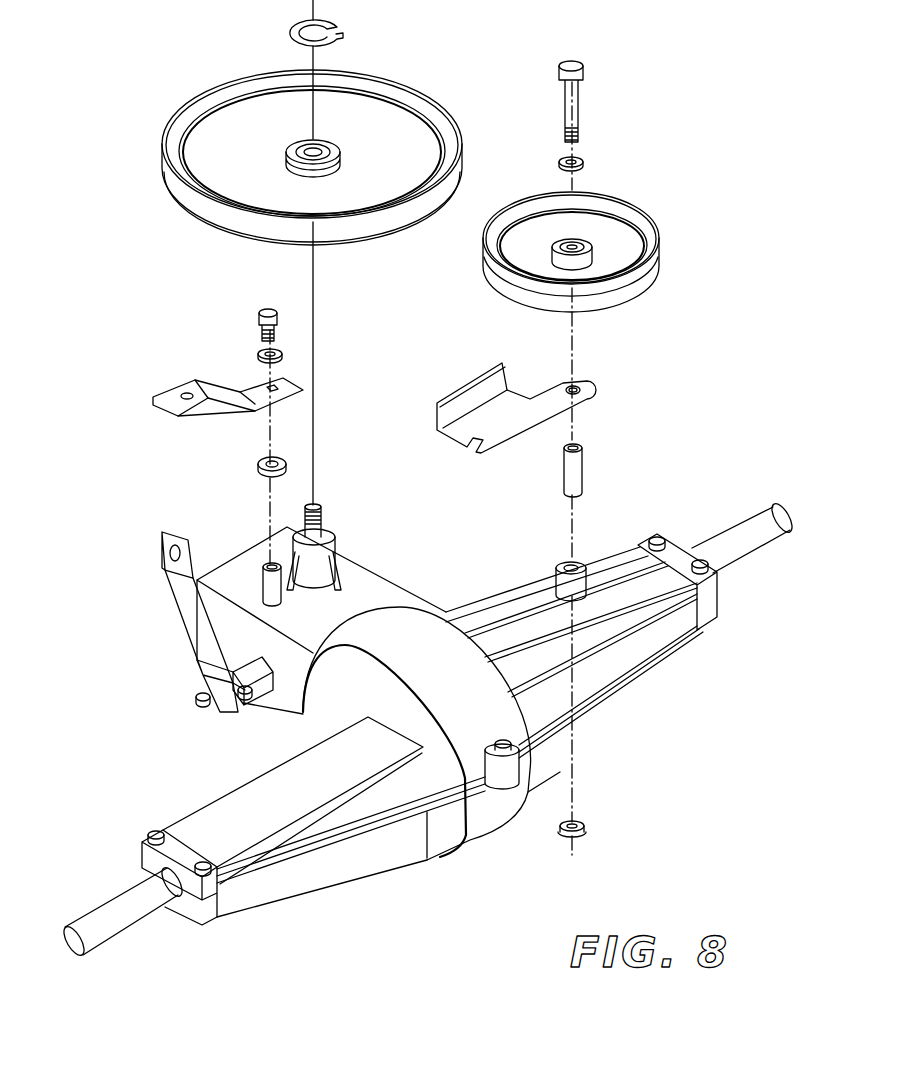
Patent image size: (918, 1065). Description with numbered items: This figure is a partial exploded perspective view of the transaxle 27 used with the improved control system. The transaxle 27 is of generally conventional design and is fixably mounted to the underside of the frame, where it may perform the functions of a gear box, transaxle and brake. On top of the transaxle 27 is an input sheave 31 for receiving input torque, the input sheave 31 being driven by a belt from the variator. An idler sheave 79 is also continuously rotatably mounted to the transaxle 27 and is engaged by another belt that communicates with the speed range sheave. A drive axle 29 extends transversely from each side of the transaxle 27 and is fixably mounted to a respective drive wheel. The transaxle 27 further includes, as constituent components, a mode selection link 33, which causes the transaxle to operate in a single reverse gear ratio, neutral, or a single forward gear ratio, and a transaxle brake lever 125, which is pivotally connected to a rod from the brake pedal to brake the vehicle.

The input sheave 31 is at (428, 92).
The idler sheave 79 is at (647, 217).
The mode selection link 33 is at (205, 380).
The transaxle brake lever 125 is at (157, 553).
The drive axle 29 is at (757, 512).
The transaxle 27 is at (478, 860).